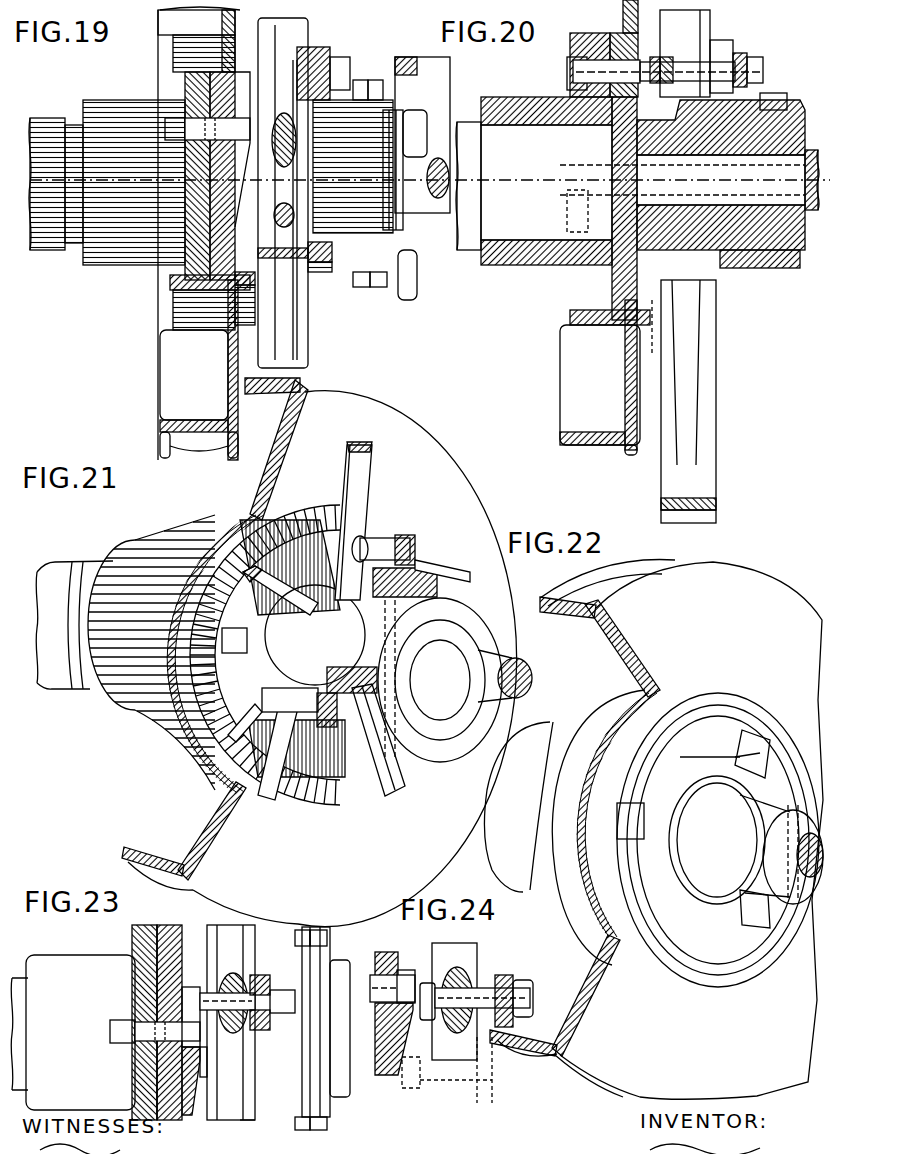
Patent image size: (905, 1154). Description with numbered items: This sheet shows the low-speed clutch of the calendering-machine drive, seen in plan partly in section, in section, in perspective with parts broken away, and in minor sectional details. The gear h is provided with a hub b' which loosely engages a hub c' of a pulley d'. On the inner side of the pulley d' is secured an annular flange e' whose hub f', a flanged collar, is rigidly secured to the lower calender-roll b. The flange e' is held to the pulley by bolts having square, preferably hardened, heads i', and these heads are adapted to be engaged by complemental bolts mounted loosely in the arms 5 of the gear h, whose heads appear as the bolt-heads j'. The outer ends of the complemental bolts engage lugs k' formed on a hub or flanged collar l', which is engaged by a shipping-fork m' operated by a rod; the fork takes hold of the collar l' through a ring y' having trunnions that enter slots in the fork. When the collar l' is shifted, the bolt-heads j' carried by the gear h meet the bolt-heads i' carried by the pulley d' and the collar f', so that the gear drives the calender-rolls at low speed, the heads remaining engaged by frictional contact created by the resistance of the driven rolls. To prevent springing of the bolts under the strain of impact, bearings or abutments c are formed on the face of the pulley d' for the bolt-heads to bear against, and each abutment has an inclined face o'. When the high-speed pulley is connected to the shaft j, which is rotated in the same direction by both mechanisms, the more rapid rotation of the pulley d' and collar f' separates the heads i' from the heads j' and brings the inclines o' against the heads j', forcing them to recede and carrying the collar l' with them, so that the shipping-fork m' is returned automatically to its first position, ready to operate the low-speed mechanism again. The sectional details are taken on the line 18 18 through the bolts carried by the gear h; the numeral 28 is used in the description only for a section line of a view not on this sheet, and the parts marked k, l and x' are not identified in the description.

In FIG. 19, the lower calender-roll b is at (54, 163).
In FIG. 20, the lower calender-roll b is at (468, 205).
In FIG. 21, the lower calender-roll b is at (66, 618).
In FIG. 22, the lower calender-roll b is at (518, 792).
In FIG. 23, the lower calender-roll b is at (15, 1010).
In FIG. 19, the abutment c is at (184, 149).
In FIG. 21, the abutment c is at (363, 617).
In FIG. 22, the abutment c is at (704, 810).
In FIG. 23, the abutment c is at (235, 1034).
In FIG. 24, the abutment c is at (381, 1002).
In FIG. 19, the shaft j is at (422, 178).
In FIG. 20, the shaft j is at (811, 165).
In FIG. 21, the shaft j is at (505, 667).
In FIG. 22, the shaft j is at (793, 876).
In FIG. 19, the gear h is at (306, 336).
In FIG. 20, the gear h is at (710, 437).
In FIG. 23, the gear h is at (246, 1112).
In FIG. 24, the gear h is at (467, 961).
In FIG. 23, the plate l is at (303, 1040).
In FIG. 19, the bolt k is at (283, 283).
In FIG. 23, the bolt k is at (272, 978).
In FIG. 20, the arm 5 is at (690, 37).
In FIG. 21, the arm 5 is at (364, 500).
In FIG. 23, the arm 5 is at (232, 975).
In FIG. 24, the arm 5 is at (481, 1070).
In FIG. 20, the section line 18 is at (650, 192).
In FIG. 20, the section line 28 is at (566, 74).
In FIG. 20, the hub b' is at (686, 223).
In FIG. 21, the hub b' is at (449, 680).
In FIG. 22, the hub b' is at (729, 853).
In FIG. 19, the hub c' is at (429, 125).
In FIG. 20, the hub c' is at (721, 255).
In FIG. 23, the hub c' is at (279, 1086).
In FIG. 19, the pulley d' is at (183, 367).
In FIG. 20, the pulley d' is at (578, 377).
In FIG. 21, the pulley d' is at (319, 646).
In FIG. 22, the pulley d' is at (656, 816).
In FIG. 19, the annular flange e' is at (172, 235).
In FIG. 20, the annular flange e' is at (582, 382).
In FIG. 21, the annular flange e' is at (265, 634).
In FIG. 22, the annular flange e' is at (703, 824).
In FIG. 23, the annular flange e' is at (82, 1032).
In FIG. 19, the hub f' is at (129, 201).
In FIG. 20, the hub f' is at (546, 194).
In FIG. 21, the hub f' is at (151, 652).
In FIG. 23, the hub f' is at (127, 1022).
In FIG. 19, the bolt-head i' is at (187, 97).
In FIG. 20, the bolt-head i' is at (584, 121).
In FIG. 21, the bolt-head i' is at (286, 680).
In FIG. 22, the bolt-head i' is at (714, 837).
In FIG. 23, the bolt-head i' is at (142, 1045).
In FIG. 24, the bolt-head i' is at (392, 964).
In FIG. 19, the bolt-head j' is at (206, 18).
In FIG. 20, the bolt-head j' is at (683, 162).
In FIG. 21, the bolt-head j' is at (290, 580).
In FIG. 23, the bolt-head j' is at (191, 984).
In FIG. 24, the bolt-head j' is at (424, 974).
In FIG. 19, the lug k' is at (345, 121).
In FIG. 20, the lug k' is at (715, 53).
In FIG. 21, the lug k' is at (424, 518).
In FIG. 24, the lug k' is at (516, 988).
In FIG. 19, the hub l' is at (304, 144).
In FIG. 20, the hub l' is at (721, 201).
In FIG. 21, the hub l' is at (426, 591).
In FIG. 19, the shipping-fork m' is at (388, 176).
In FIG. 23, the shipping-fork m' is at (348, 1041).
In FIG. 19, the inclined face o' is at (297, 197).
In FIG. 22, the inclined face o' is at (692, 839).
In FIG. 23, the inclined face o' is at (238, 1074).
In FIG. 24, the inclined face o' is at (447, 1059).
In FIG. 19, the jam nut x' is at (356, 176).
In FIG. 23, the jam nut x' is at (326, 1032).
In FIG. 19, the ring y' is at (416, 149).
In FIG. 20, the ring y' is at (791, 89).
In FIG. 21, the ring y' is at (312, 757).
In FIG. 23, the ring y' is at (349, 1047).